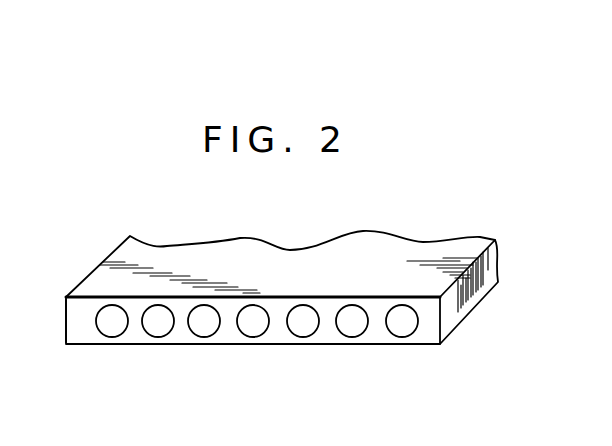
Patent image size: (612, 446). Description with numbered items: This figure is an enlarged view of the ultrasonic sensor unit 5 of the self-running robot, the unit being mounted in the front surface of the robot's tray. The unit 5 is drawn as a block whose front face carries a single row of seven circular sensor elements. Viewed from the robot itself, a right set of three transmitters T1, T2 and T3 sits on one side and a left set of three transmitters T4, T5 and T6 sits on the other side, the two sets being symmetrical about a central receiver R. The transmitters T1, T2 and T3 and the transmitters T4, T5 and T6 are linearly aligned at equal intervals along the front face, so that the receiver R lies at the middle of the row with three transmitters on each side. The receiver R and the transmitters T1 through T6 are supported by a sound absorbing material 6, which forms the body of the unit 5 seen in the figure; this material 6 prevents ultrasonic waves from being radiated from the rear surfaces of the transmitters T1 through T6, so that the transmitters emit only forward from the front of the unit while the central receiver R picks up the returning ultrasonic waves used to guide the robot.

The ultrasonic sensor unit 5 is at (430, 337).
The sound absorbing material 6 is at (80, 336).
The transmitter T1 is at (112, 341).
The transmitter T2 is at (158, 341).
The transmitter T3 is at (204, 341).
The receiver R is at (253, 341).
The transmitter T4 is at (303, 341).
The transmitter T5 is at (352, 341).
The transmitter T6 is at (402, 341).